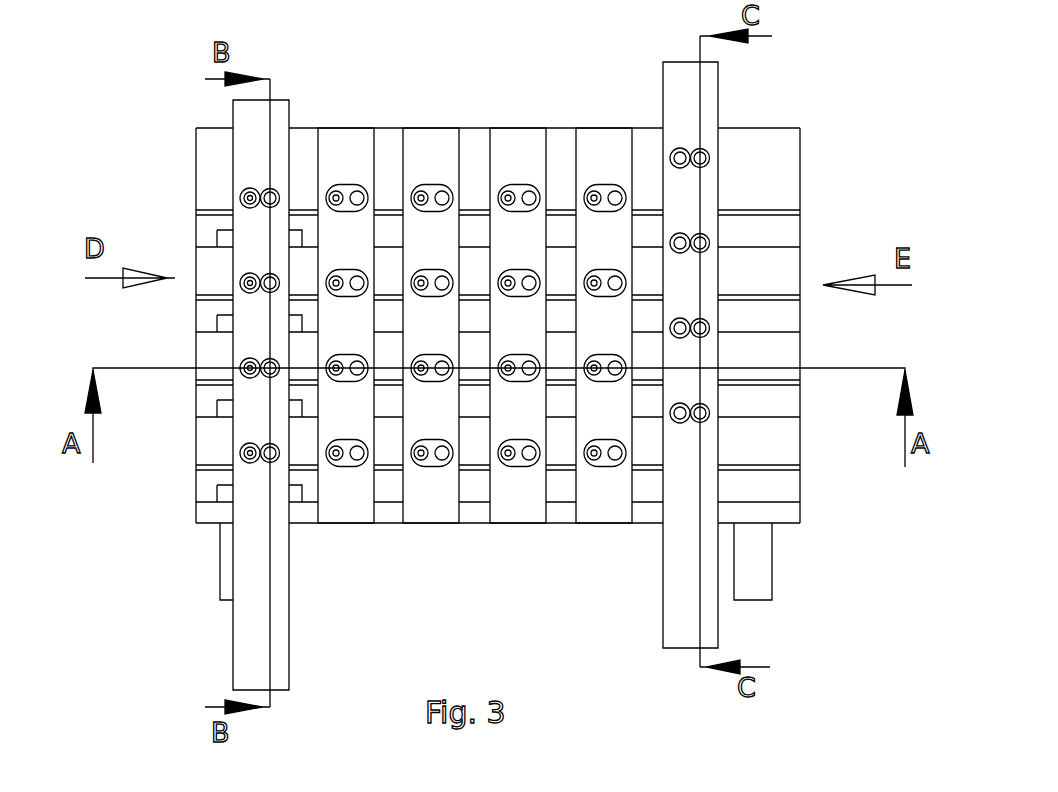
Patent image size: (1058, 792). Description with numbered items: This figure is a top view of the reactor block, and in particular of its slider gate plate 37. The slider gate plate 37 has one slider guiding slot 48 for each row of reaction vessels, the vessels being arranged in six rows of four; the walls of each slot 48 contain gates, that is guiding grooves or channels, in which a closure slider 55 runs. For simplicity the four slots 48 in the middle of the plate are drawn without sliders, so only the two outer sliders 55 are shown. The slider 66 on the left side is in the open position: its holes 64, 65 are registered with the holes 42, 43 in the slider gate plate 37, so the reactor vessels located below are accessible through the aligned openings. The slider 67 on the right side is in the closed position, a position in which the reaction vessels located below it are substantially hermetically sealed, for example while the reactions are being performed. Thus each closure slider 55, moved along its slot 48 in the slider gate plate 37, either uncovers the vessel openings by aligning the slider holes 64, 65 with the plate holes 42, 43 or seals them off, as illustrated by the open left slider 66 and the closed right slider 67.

The slider gate plate 37 is at (757, 266).
The hole in slider gate plate 42 is at (357, 457).
The hole in slider gate plate 43 is at (336, 456).
The slider guiding slot 48 is at (604, 150).
The closure slider 55 is at (252, 236).
The slider hole 64 is at (265, 455).
The slider hole 65 is at (250, 455).
The slider 66 is at (245, 630).
The slider 67 is at (677, 586).